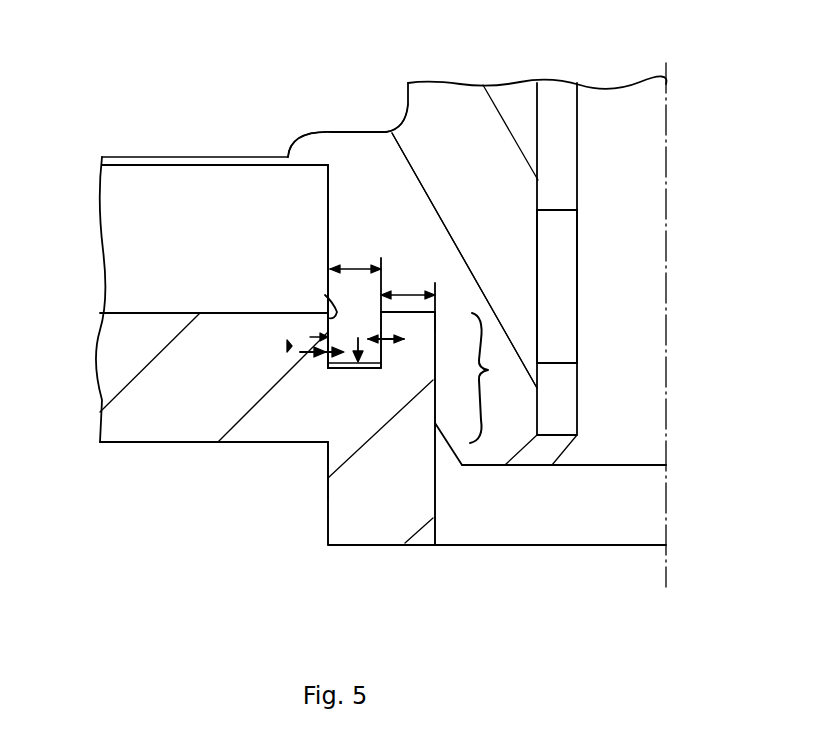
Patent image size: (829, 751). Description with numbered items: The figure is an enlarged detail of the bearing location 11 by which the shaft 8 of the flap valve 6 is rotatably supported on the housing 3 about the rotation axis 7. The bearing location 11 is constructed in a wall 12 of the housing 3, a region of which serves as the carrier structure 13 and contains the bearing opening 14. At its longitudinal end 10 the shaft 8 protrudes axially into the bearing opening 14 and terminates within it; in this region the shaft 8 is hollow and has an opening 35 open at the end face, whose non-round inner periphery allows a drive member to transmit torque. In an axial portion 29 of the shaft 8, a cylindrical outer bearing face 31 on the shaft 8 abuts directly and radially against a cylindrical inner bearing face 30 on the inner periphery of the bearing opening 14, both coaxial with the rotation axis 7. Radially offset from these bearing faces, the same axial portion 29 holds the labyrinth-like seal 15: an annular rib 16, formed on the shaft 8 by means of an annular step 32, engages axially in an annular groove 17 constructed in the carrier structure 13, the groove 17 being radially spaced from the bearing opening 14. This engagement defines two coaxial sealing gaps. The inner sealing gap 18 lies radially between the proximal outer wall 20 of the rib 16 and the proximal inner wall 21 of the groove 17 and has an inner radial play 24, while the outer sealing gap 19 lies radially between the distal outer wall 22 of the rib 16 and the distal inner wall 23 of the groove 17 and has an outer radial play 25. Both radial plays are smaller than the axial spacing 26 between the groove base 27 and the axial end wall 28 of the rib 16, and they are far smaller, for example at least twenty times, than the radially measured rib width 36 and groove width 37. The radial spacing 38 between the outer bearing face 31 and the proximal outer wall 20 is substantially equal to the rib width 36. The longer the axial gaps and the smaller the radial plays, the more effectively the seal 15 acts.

The housing 3 is at (333, 495).
The flap valve 6 is at (386, 131).
The rotation axis 7 is at (666, 204).
The shaft 8 is at (470, 125).
The longitudinal end 10 is at (505, 306).
The bearing location 11 is at (253, 233).
The wall 12 is at (117, 442).
The carrier structure 13 is at (178, 420).
The bearing opening 14 is at (535, 527).
The labyrinth-like seal 15 is at (286, 345).
The annular rib 16 is at (407, 378).
The annular groove 17 is at (325, 295).
The inner sealing gap 18 is at (390, 334).
The outer sealing gap 19 is at (310, 337).
The outer wall of the rib (proximal) 20 is at (365, 378).
The inner wall of the groove (proximal) 21 is at (372, 320).
The outer wall of the rib (distal) 22 is at (290, 445).
The inner wall of the groove (distal) 23 is at (325, 303).
The inner radial play 24 is at (416, 275).
The outer radial play 25 is at (320, 353).
The axial spacing 26 is at (354, 379).
The groove base 27 is at (306, 485).
The axial end wall of the rib 28 is at (350, 457).
The axial portion 29 is at (497, 378).
The inner bearing face 30 is at (440, 333).
The outer bearing face 31 is at (386, 347).
The annular step 32 is at (343, 182).
The opening 35 is at (580, 395).
The rib width 36 is at (382, 327).
The groove width 37 is at (382, 327).
The radial spacing 38 is at (408, 293).